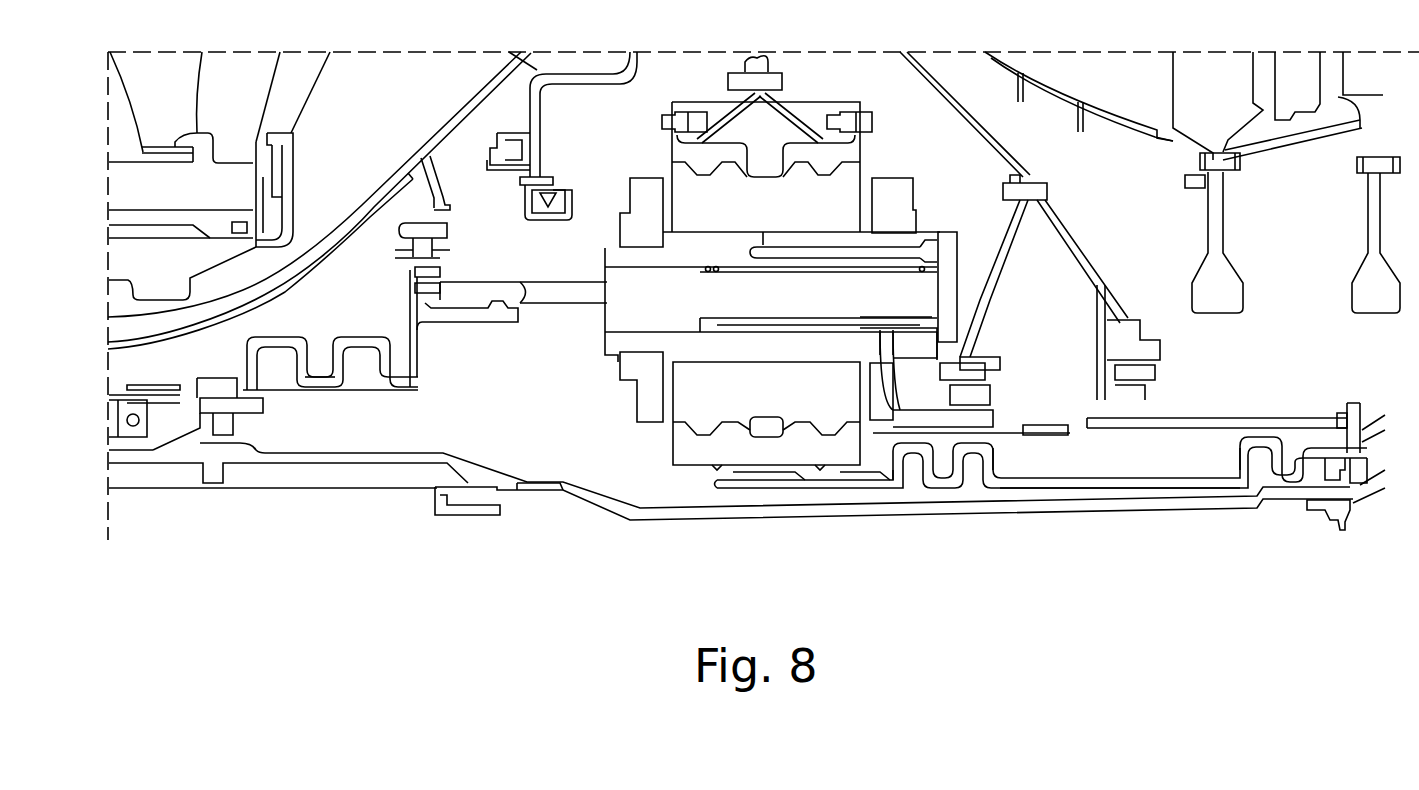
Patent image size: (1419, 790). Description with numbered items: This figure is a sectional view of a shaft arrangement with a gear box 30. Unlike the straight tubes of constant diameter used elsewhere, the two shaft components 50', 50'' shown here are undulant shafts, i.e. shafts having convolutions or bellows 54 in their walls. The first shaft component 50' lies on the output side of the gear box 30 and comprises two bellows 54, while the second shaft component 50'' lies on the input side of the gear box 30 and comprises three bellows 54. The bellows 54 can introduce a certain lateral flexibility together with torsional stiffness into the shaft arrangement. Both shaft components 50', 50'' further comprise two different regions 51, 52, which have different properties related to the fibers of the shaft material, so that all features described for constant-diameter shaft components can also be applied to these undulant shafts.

The gear box 30 is at (697, 467).
The first shaft component 50' is at (330, 503).
The second shaft component 50'' is at (1120, 552).
The region 51 is at (280, 342).
The region 52 is at (319, 384).
The bellows 54 is at (897, 472).